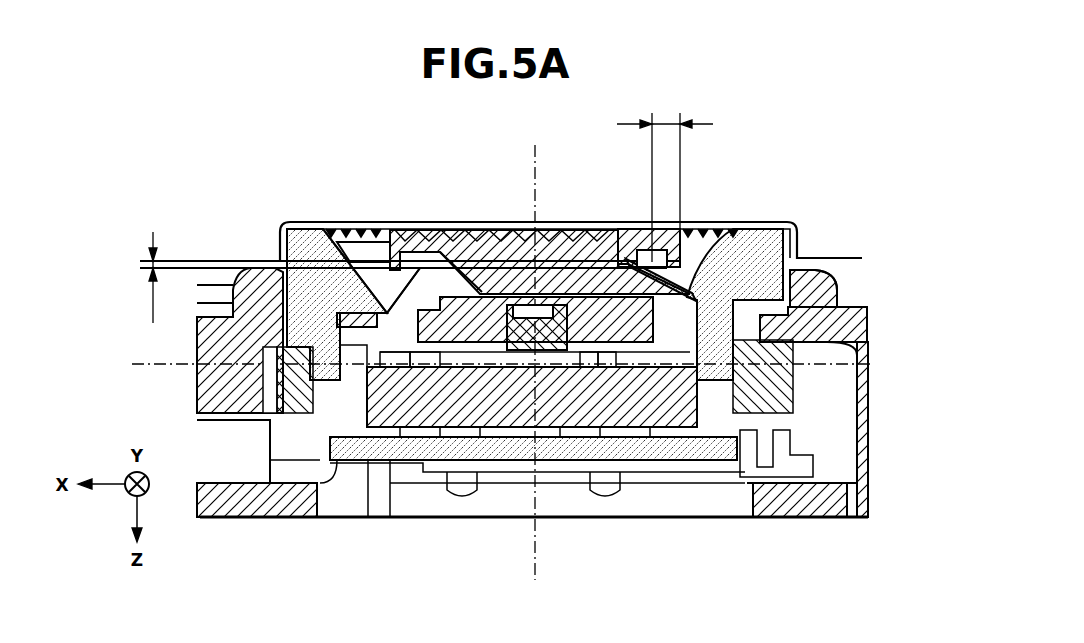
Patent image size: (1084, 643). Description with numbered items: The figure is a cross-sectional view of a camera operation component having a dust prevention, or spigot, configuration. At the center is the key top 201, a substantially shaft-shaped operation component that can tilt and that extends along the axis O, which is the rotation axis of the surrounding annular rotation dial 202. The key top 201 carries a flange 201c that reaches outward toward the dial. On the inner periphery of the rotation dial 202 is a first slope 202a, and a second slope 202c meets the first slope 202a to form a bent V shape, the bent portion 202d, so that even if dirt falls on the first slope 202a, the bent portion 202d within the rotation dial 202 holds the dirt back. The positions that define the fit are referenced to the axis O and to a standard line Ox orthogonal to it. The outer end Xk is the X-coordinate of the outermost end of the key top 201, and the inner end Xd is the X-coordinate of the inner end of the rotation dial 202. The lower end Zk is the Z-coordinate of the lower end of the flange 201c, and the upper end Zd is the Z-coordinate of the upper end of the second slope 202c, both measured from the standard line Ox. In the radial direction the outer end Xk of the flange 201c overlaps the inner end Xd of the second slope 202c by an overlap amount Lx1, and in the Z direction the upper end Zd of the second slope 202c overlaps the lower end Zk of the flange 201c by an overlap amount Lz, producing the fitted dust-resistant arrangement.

The key top 201 is at (482, 228).
The flange 201c is at (413, 228).
The rotation dial 202 is at (776, 232).
The first slope 202a is at (727, 232).
The second slope 202c is at (637, 250).
The bent portion 202d is at (690, 297).
The axis O is at (535, 351).
The standard line Ox is at (483, 364).
The upper end Zd is at (387, 265).
The lower end Zk is at (379, 268).
The inner end Xd is at (650, 261).
The outer end Xk is at (677, 267).
The overlap amount Lx1 is at (665, 179).
The overlap amount Lz is at (131, 277).